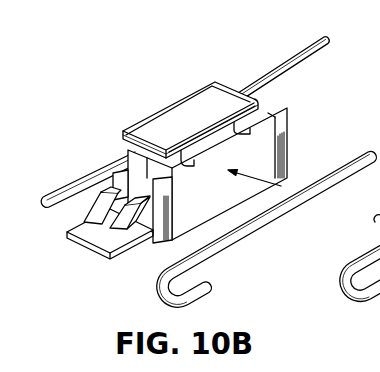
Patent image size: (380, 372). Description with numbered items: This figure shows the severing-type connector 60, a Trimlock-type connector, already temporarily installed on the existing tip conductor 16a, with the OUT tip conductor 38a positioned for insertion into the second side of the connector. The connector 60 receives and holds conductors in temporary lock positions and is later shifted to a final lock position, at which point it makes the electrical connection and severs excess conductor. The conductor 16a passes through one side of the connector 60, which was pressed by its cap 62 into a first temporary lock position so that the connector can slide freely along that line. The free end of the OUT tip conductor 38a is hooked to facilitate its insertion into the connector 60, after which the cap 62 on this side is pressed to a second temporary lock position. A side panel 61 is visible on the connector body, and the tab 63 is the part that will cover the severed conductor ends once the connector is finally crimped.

The tip conductor 16a is at (305, 44).
The OUT tip conductor 38a is at (244, 240).
The severing-type connector 60 is at (296, 116).
The side panel 61 is at (276, 146).
The connector cap 62 is at (186, 101).
The tab 63 is at (82, 249).